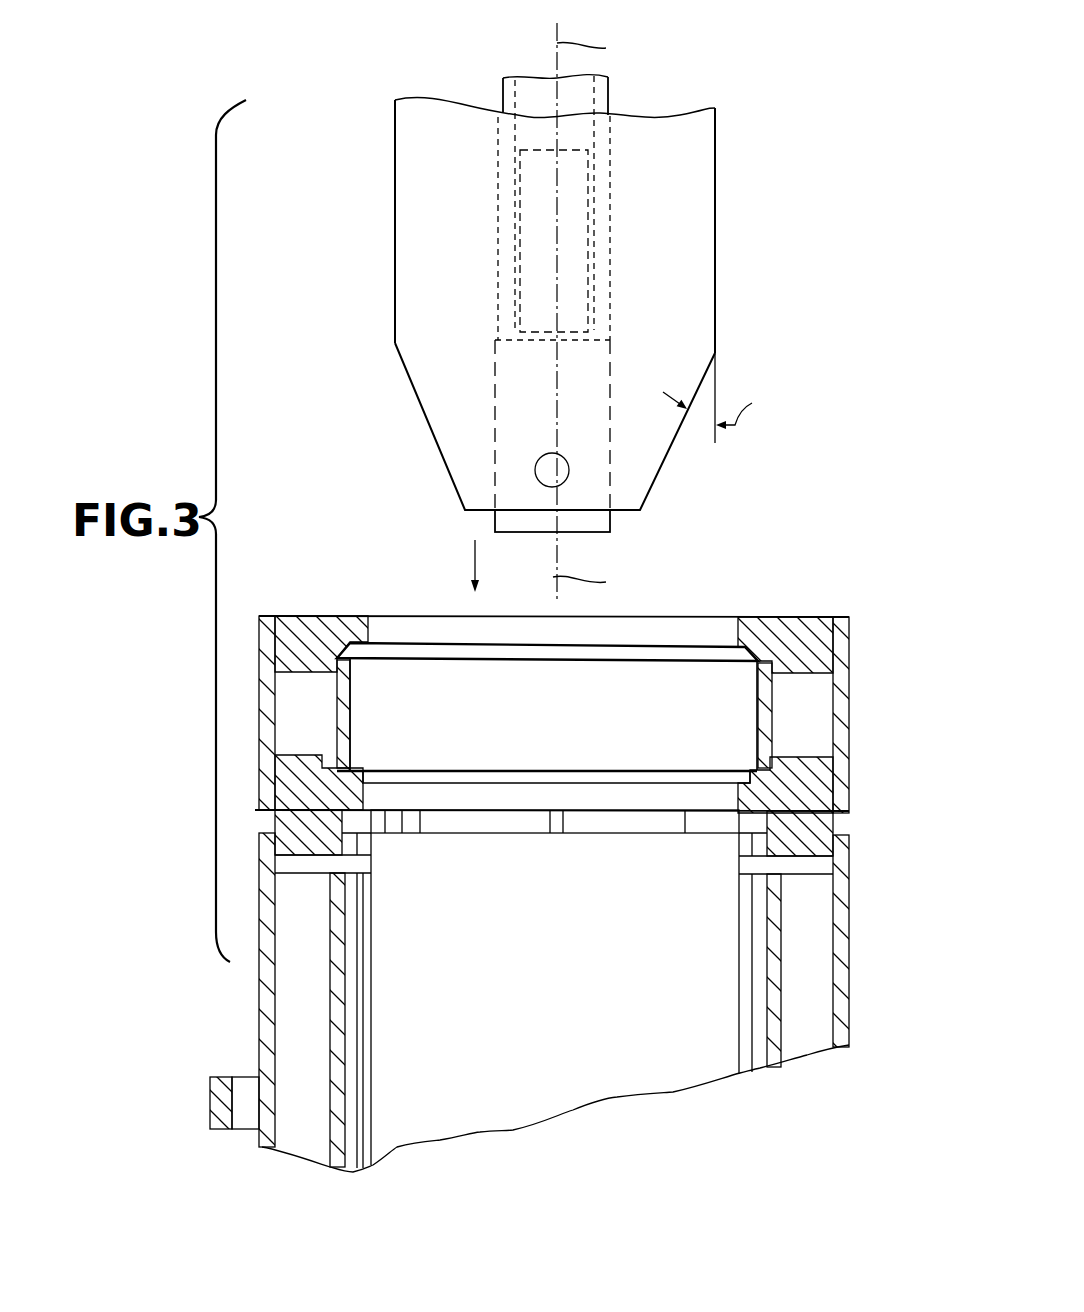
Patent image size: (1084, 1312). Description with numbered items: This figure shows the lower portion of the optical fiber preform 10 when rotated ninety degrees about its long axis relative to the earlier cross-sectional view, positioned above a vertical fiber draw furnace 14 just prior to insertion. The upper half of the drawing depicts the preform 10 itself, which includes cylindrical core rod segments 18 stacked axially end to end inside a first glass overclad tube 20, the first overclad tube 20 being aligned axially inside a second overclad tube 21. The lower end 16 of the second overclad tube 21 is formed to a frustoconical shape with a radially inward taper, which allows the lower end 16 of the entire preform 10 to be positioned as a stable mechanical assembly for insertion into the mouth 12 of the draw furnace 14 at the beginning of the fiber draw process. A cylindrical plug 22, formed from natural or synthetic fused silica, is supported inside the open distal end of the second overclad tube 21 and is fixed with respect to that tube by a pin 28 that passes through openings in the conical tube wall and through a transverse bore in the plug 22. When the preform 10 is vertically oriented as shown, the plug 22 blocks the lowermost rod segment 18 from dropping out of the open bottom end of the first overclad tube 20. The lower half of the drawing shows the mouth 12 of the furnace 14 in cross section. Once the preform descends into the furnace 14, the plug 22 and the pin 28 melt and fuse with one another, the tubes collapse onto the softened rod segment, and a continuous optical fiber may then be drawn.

The optical fiber preform 10 is at (380, 208).
The mouth 12 is at (382, 616).
The vertical fiber draw furnace 14 is at (861, 882).
The lower end 16 is at (423, 425).
The core rod segments 18 is at (566, 236).
The first glass overclad tube 20 is at (503, 92).
The second overclad tube 21 is at (715, 172).
The cylindrical plug 22 is at (592, 534).
The pin 28 is at (545, 480).